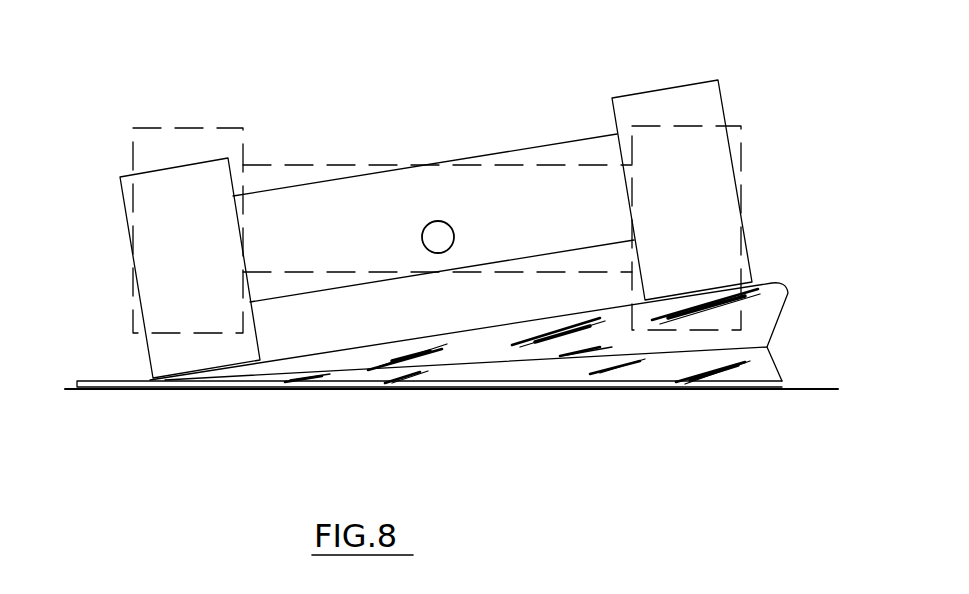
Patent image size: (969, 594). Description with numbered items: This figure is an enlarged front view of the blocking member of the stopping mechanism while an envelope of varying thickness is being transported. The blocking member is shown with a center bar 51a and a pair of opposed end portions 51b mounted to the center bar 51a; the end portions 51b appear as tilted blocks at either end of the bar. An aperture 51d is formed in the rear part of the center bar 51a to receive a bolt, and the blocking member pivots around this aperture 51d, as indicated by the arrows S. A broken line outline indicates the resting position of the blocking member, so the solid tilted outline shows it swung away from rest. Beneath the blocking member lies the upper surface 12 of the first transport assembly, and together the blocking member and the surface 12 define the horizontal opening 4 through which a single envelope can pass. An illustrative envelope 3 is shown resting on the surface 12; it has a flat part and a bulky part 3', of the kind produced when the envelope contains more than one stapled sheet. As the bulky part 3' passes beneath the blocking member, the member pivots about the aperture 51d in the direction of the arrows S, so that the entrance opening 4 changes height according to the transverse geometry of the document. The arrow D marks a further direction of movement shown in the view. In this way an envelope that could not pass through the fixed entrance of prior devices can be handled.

The envelope 3 is at (469, 378).
The bulky part 3' is at (398, 413).
The horizontal opening 4 is at (124, 368).
The upper surface 12 is at (813, 388).
The center bar 51a is at (515, 152).
The end portions 51b is at (173, 167).
The aperture 51d is at (421, 229).
The direction D is at (420, 123).
The pivoting direction arrows S is at (820, 243).